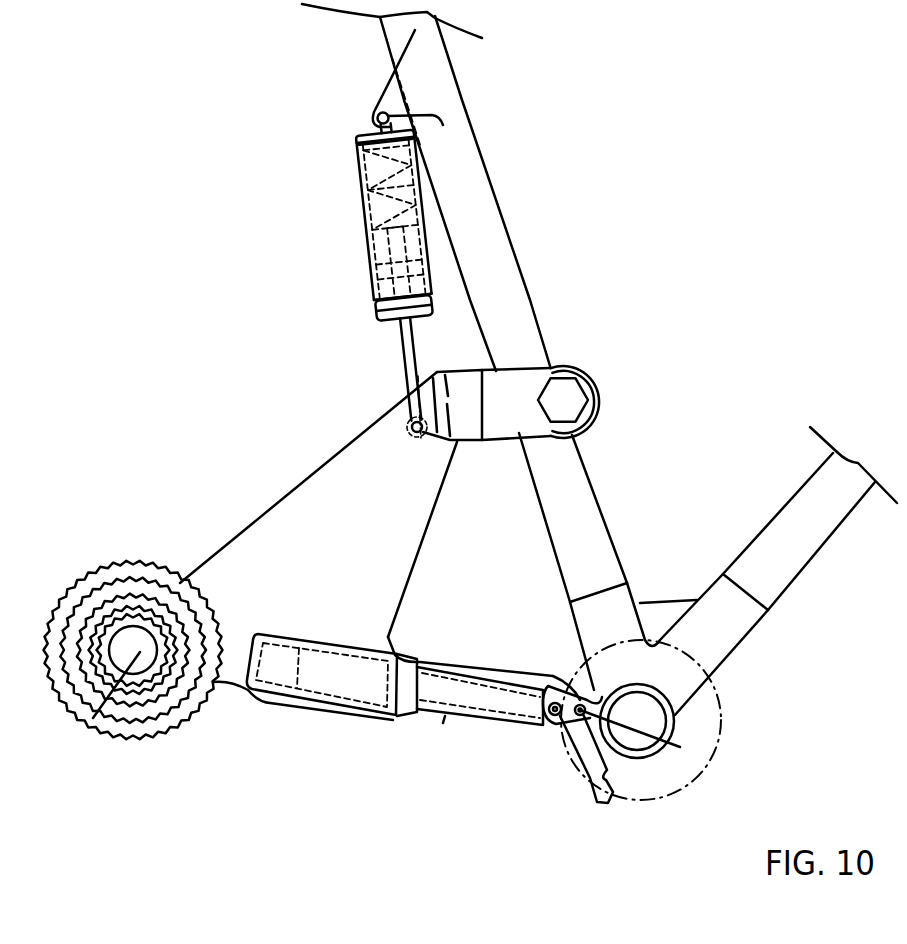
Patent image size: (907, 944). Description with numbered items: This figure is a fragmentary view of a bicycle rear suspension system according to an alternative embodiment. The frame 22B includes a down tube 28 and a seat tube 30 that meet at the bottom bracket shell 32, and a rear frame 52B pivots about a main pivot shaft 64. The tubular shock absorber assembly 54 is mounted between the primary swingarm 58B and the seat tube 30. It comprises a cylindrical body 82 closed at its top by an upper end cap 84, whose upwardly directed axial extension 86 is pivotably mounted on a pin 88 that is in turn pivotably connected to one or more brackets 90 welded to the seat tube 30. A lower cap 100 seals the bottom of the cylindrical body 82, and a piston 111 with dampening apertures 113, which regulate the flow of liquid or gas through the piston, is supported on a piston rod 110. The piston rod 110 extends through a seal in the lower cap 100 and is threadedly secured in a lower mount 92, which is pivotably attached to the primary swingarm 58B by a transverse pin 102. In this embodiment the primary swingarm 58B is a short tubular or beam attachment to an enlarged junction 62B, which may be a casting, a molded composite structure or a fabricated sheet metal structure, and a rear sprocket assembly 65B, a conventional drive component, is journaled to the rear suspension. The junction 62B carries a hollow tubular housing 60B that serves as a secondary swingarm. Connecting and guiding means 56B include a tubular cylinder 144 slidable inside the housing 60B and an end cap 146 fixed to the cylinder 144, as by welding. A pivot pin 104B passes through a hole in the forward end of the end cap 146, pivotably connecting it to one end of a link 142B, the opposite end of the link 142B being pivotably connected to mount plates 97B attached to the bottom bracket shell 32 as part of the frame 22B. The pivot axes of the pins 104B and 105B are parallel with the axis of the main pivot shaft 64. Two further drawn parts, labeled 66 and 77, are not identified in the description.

The frame 22B is at (456, 72).
The seat tube 30 is at (460, 130).
The dampening apertures 113 is at (430, 247).
The down tube 28 is at (820, 508).
The bottom bracket shell 32 is at (672, 744).
The mount plate 97B is at (686, 752).
The bracket 90 is at (400, 90).
The pin 88 is at (373, 118).
The axial extension 86 is at (385, 133).
The cylindrical body 82 is at (394, 218).
The upper end cap 84 is at (394, 218).
The piston 111 is at (398, 262).
The tubular shock absorber assembly 54 is at (403, 297).
The lower cap 100 is at (404, 308).
The piston rod 110 is at (410, 368).
The lower mount 92 is at (408, 422).
The rear frame 52B is at (330, 460).
The transverse pin 102 is at (458, 441).
The primary swingarm 58B is at (535, 432).
The ring 66 is at (600, 372).
The main pivot shaft 64 is at (563, 408).
The enlarged junction 62B is at (233, 560).
The crank axle 77 is at (93, 718).
The rear sprocket assembly 65B is at (145, 738).
The hollow tubular housing 60B is at (400, 722).
The pivot pin 104B is at (550, 720).
The tubular cylinder 144 is at (443, 723).
The connecting and guiding means 56B is at (455, 663).
The pin 105B is at (613, 790).
The end cap 146 is at (574, 718).
The link 142B is at (597, 802).